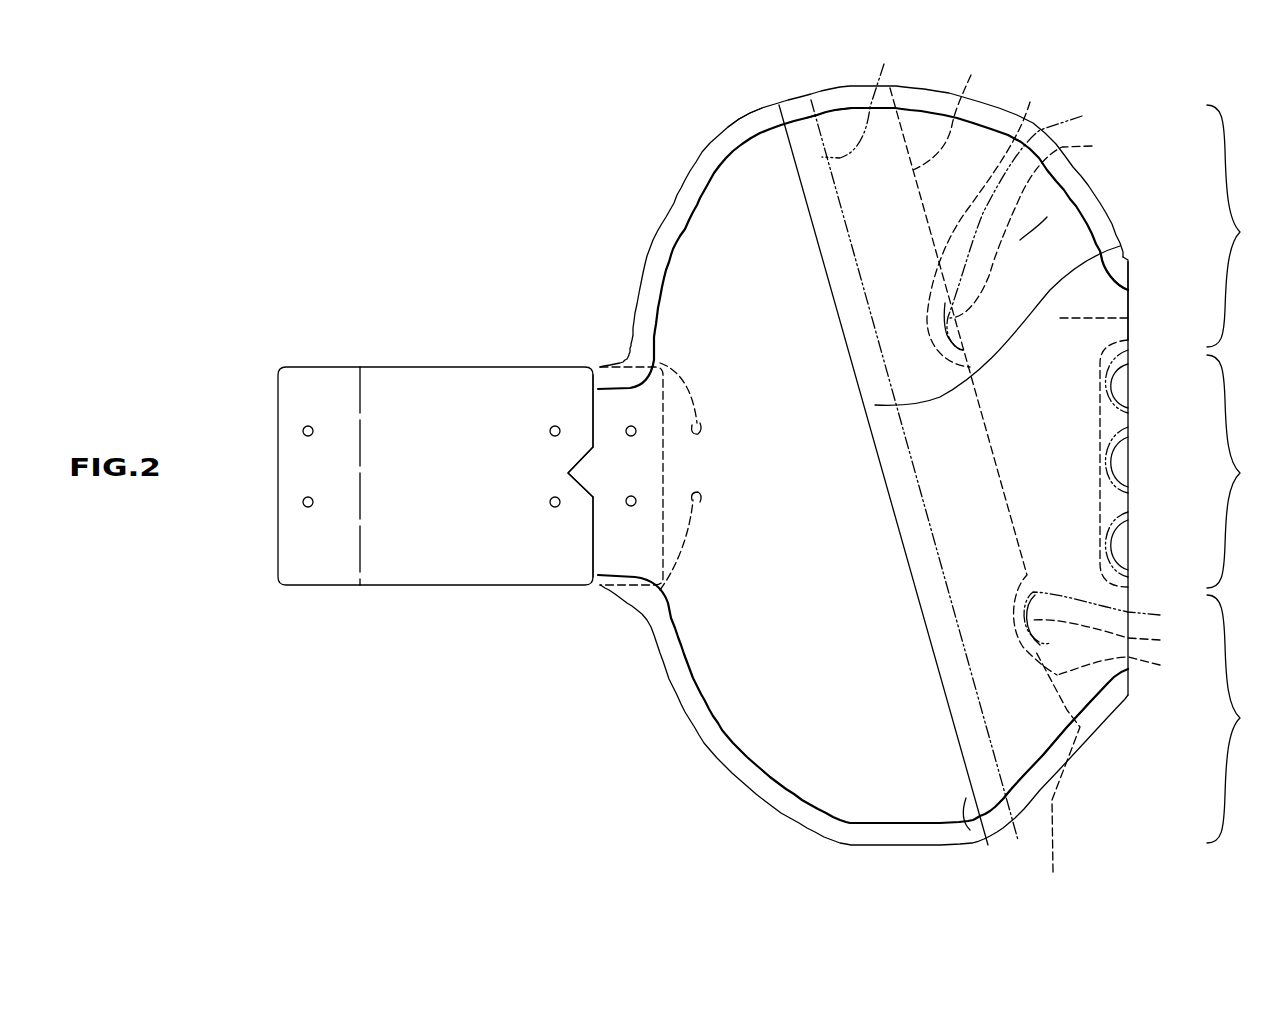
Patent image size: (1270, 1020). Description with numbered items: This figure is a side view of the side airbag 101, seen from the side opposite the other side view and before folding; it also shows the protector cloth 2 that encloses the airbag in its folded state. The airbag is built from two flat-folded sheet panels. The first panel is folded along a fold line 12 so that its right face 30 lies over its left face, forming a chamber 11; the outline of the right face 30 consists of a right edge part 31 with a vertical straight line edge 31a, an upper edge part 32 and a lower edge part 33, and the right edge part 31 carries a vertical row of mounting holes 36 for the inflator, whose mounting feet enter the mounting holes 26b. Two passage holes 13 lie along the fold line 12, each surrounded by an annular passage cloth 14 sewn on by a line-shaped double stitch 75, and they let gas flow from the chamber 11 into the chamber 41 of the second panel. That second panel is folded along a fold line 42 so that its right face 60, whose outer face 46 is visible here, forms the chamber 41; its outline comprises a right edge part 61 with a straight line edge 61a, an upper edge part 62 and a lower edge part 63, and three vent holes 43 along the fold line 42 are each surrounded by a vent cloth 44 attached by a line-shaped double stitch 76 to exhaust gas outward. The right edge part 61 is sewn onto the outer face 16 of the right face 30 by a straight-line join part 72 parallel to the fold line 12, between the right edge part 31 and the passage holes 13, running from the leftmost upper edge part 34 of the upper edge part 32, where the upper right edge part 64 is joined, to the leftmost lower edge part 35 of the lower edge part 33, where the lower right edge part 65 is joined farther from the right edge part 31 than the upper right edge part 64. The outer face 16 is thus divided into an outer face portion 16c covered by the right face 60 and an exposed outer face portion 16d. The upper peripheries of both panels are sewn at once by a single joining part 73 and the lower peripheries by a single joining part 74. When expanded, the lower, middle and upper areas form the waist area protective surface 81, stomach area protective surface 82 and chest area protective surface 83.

The side airbag 101 is at (507, 108).
The protector cloth 2 is at (447, 372).
The straight line edge 31a is at (593, 447).
The right edge part 31 is at (613, 447).
The mounting holes 36 is at (633, 427).
The mounting holes 26b is at (647, 360).
The right face 30 is at (737, 210).
The chamber 11 is at (737, 667).
The outer face 16 is at (710, 257).
The outer face portion 16d is at (857, 775).
The outer face portion 16c is at (1023, 707).
The upper edge part 32 is at (751, 127).
The upper right edge part 64 is at (813, 103).
The leftmost upper edge part 34 is at (843, 97).
The straight-line join part 72 is at (914, 438).
The upper edge part 62 is at (928, 103).
The fold line 12 is at (973, 361).
The annular passage cloth 14 is at (1058, 376).
The passage hole 13 is at (1069, 391).
The line-shaped double stitch 75 is at (1066, 371).
The leftmost lower edge part 35 is at (1057, 772).
The right face 60 is at (1047, 217).
The outer face 46 is at (1053, 238).
The right edge part 61 is at (1087, 253).
The fold line 42 is at (1130, 298).
The chamber 41 is at (1128, 318).
The vent cloth 44 is at (1110, 420).
The line-shaped double stitch 76 is at (1128, 352).
The vent hole 43 is at (1128, 380).
The chest area protective surface 83 is at (1235, 226).
The stomach area protective surface 82 is at (1235, 471).
The waist area protective surface 81 is at (1235, 719).
The lower edge part 63 is at (1070, 760).
The lower right edge part 65 is at (1020, 800).
The straight line edge 61a is at (977, 793).
The lower edge part 33 is at (921, 828).
The joining part 74 is at (788, 810).
The joining part 73 is at (737, 157).